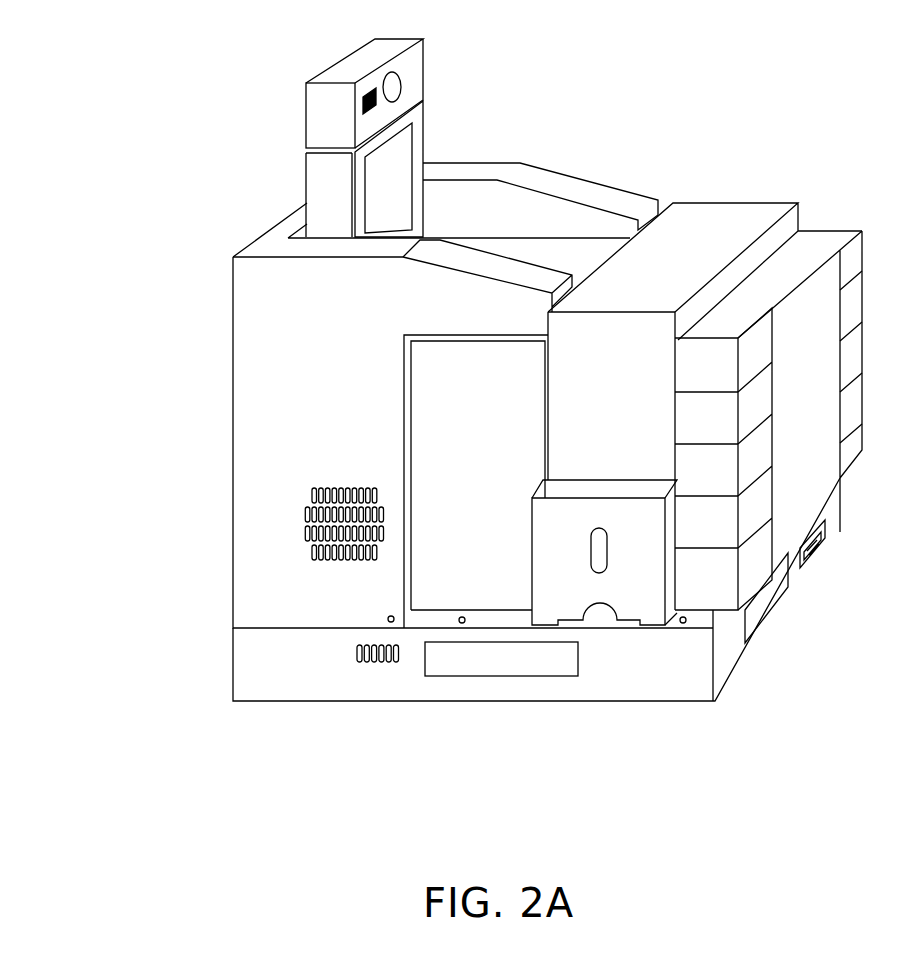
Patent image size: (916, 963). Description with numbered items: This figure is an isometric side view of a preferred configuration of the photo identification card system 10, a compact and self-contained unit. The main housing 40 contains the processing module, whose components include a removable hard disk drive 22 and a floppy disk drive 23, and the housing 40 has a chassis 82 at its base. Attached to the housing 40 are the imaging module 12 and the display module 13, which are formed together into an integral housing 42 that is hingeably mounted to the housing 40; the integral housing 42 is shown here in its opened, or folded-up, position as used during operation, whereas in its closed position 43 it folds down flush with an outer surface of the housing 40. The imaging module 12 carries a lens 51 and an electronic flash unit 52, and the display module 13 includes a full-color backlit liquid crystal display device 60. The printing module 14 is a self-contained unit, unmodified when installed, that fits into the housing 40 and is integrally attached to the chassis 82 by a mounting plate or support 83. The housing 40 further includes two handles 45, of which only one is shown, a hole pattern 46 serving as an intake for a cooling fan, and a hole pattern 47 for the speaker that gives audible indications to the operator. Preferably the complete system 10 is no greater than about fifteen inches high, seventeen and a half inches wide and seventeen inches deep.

The photo identification card system 10 is at (183, 293).
The imaging module 12 is at (318, 112).
The display module 13 is at (332, 197).
The printing module 14 is at (735, 220).
The hard disk drive 22 is at (763, 605).
The floppy disk drive 23 is at (822, 550).
The housing 40 is at (233, 418).
The integral housing 42 is at (418, 113).
The closed position 43 is at (300, 142).
The handles 45 is at (528, 672).
The hole pattern 46 is at (298, 522).
The hole pattern 47 is at (380, 674).
The lens 51 is at (395, 82).
The electronic flash unit 52 is at (363, 96).
The liquid crystal display device 60 is at (398, 177).
The chassis 82 is at (265, 683).
The mounting plate 83 is at (437, 620).